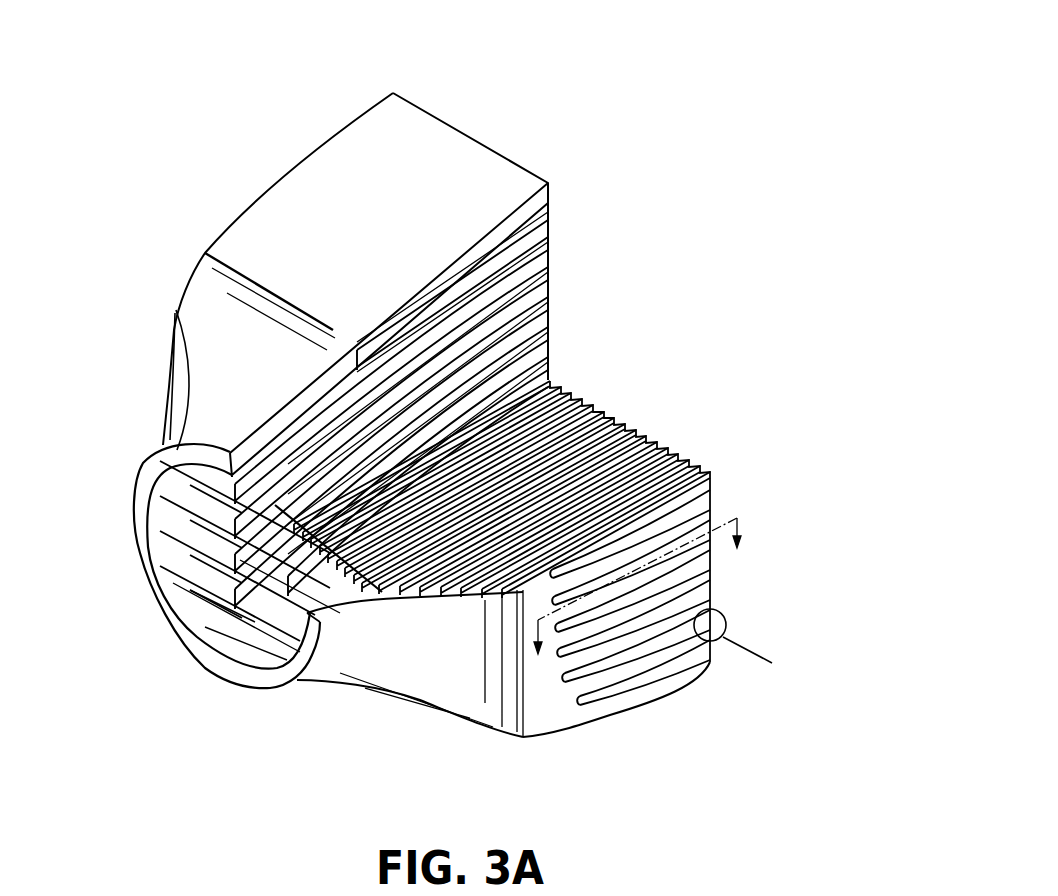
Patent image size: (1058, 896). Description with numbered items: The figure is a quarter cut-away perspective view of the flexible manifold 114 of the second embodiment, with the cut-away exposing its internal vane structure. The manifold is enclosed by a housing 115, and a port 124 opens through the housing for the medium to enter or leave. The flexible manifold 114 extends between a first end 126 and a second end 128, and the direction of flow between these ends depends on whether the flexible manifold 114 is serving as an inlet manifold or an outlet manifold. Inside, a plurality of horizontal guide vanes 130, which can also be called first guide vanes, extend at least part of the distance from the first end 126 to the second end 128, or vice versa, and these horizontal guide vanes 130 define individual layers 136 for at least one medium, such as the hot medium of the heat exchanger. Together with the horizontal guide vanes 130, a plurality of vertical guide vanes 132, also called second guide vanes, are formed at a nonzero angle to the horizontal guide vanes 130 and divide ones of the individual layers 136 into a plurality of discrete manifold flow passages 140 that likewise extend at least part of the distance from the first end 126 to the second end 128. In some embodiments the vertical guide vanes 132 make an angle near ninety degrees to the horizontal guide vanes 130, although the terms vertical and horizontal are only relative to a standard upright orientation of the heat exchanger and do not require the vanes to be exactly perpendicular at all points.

The flexible manifold 114 is at (600, 84).
The housing 115 is at (397, 222).
The port 124 is at (198, 666).
The first end 126 is at (100, 486).
The second end 128 is at (762, 517).
The horizontal guide vanes 130 is at (552, 298).
The vertical guide vanes 132 is at (593, 401).
The individual layers 136 is at (707, 587).
The discrete manifold flow passages 140 is at (553, 234).